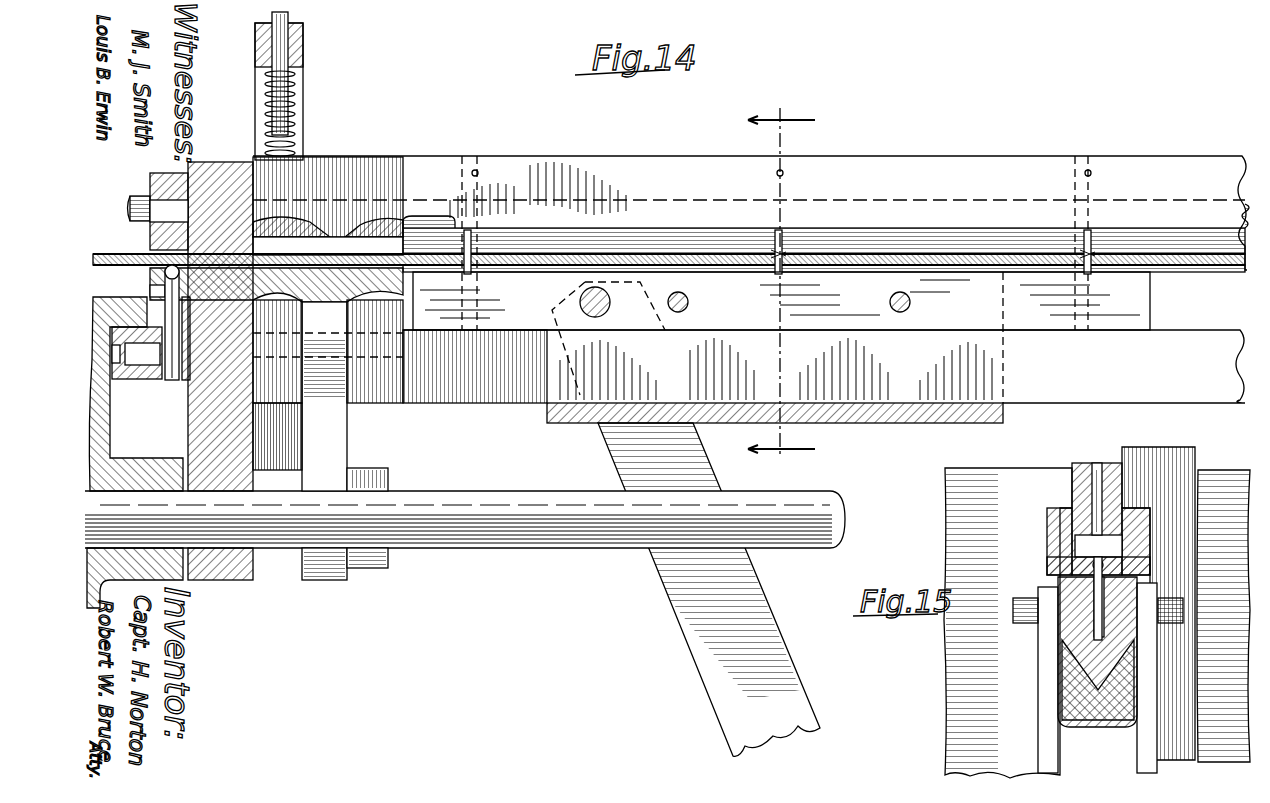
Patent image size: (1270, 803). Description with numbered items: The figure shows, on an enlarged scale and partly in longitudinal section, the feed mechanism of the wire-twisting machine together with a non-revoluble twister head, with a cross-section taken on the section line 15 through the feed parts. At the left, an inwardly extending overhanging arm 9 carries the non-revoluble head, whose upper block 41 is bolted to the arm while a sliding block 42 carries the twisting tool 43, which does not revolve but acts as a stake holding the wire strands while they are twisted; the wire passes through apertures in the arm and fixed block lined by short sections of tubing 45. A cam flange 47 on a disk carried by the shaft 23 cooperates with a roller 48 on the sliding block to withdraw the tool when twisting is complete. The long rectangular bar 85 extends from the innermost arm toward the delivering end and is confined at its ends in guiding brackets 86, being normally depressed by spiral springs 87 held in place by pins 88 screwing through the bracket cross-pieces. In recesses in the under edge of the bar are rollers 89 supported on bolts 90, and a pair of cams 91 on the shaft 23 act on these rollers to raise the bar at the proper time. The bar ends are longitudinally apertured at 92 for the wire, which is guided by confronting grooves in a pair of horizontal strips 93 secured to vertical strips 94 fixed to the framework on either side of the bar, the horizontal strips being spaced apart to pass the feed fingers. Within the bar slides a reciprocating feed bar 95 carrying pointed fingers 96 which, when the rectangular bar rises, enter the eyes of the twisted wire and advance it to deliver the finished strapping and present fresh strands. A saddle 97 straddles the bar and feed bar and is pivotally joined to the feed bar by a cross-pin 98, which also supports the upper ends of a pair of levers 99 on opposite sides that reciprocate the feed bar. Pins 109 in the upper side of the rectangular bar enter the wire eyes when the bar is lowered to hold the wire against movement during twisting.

In FIG. 14, the overhanging arm 9 is at (170, 369).
In FIG. 14, the section line 15 is at (781, 283).
In FIG. 14, the shaft 23 is at (525, 548).
In FIG. 14, the block 41 is at (150, 178).
In FIG. 14, the block 42 is at (154, 382).
In FIG. 14, the twisting tool 43 is at (165, 300).
In FIG. 14, the sections of tubing 45 is at (150, 241).
In FIG. 14, the cam flange 47 is at (117, 316).
In FIG. 14, the roller 48 is at (122, 404).
In FIG. 14, the rectangular bar 85 is at (372, 166).
In FIG. 14, the guiding bracket 86 is at (303, 62).
In FIG. 14, the spiral spring 87 is at (300, 118).
In FIG. 14, the pin 88 is at (290, 18).
In FIG. 14, the roller 89 is at (335, 352).
In FIG. 14, the bolt 90 is at (455, 420).
In FIG. 14, the cam 91 is at (322, 580).
In FIG. 14, the aperture 92 is at (402, 210).
In FIG. 14, the horizontal strip 93 is at (1212, 268).
In FIG. 15, the horizontal strip 93 is at (1150, 558).
In FIG. 14, the vertical strip 94 is at (560, 237).
In FIG. 15, the vertical strip 94 is at (1057, 510).
In FIG. 14, the feed bar 95 is at (1140, 322).
In FIG. 14, the finger 96 is at (1088, 236).
In FIG. 15, the finger 96 is at (1050, 583).
In FIG. 14, the saddle 97 is at (880, 422).
In FIG. 15, the saddle 97 is at (1058, 672).
In FIG. 14, the cross-pin 98 is at (598, 296).
In FIG. 15, the cross-pin 98 is at (1025, 620).
In FIG. 14, the lever 99 is at (690, 626).
In FIG. 15, the lever 99 is at (1045, 740).
In FIG. 14, the pin 109 is at (1082, 228).